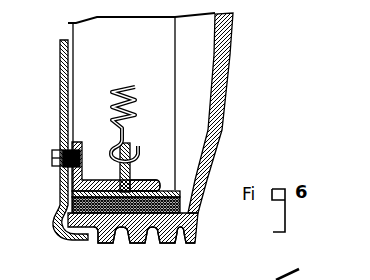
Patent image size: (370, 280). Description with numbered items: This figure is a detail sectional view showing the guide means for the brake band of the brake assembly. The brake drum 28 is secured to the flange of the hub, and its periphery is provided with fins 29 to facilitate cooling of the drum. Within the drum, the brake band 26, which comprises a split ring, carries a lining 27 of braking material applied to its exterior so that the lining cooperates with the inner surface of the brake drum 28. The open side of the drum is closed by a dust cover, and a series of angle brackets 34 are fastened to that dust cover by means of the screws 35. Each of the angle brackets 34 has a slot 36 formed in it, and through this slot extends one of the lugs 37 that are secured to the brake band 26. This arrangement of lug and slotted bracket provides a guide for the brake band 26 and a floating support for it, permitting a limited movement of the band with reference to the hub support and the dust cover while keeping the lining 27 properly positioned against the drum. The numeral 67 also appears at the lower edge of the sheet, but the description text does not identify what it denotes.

The brake band 26 is at (178, 189).
The lining 27 is at (180, 200).
The brake drum 28 is at (200, 216).
The fins 29 is at (142, 243).
The angle brackets 34 is at (63, 179).
The screws 35 is at (53, 157).
The slots 36 is at (150, 180).
The lugs 37 is at (131, 146).
The reference element 67 is at (110, 272).